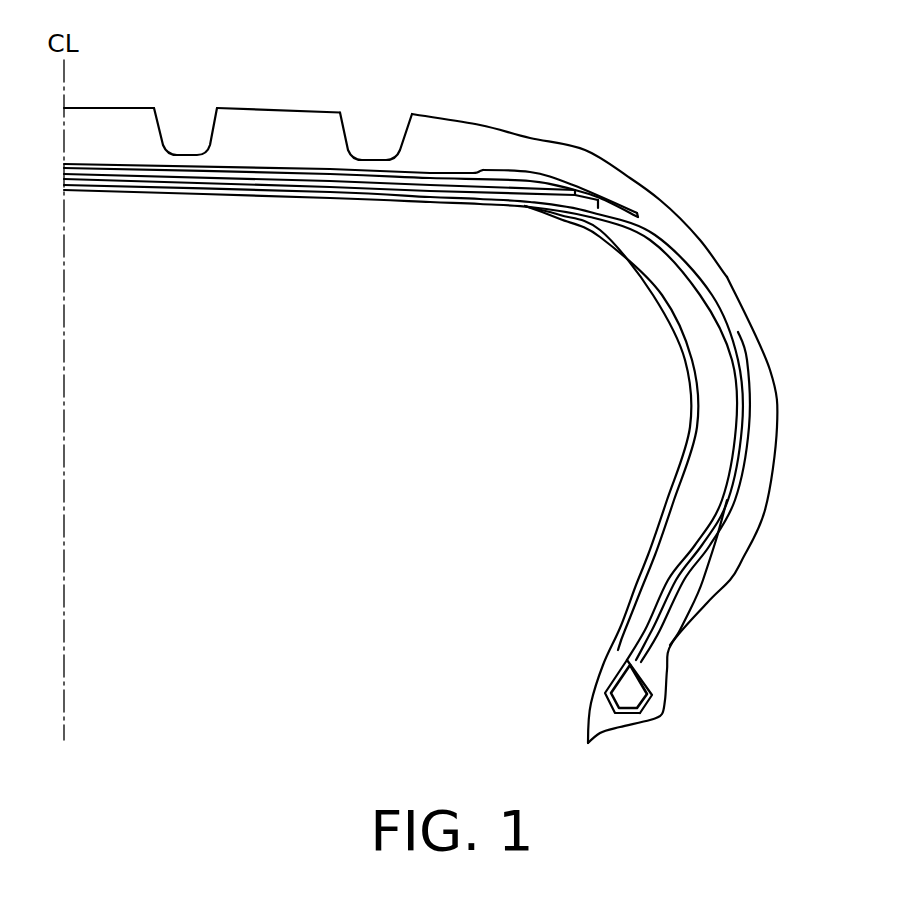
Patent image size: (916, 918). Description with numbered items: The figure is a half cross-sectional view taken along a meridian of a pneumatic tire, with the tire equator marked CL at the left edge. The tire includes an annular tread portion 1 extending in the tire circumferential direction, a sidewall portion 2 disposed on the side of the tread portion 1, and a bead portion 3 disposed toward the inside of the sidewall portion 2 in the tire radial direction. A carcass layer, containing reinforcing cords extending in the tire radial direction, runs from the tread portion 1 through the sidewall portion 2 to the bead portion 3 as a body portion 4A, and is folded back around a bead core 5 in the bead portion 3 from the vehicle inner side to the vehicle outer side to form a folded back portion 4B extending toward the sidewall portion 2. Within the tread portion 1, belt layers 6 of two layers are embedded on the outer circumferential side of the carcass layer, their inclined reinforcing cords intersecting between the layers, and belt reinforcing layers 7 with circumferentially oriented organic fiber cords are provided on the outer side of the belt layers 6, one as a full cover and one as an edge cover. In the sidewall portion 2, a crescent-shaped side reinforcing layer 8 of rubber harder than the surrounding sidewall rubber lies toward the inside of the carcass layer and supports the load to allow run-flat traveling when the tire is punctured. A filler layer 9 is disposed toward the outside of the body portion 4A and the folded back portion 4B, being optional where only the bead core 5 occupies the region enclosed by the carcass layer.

The tread portion 1 is at (108, 100).
The sidewall portion 2 is at (786, 477).
The bead portion 3 is at (678, 702).
The body portion 4A is at (610, 678).
The folded back portion 4B is at (647, 668).
The bead core 5 is at (627, 695).
The belt layer 6 is at (158, 172).
The belt reinforcing layer 7 is at (502, 172).
The side reinforcing layer 8 is at (690, 330).
The filler layer 9 is at (710, 540).